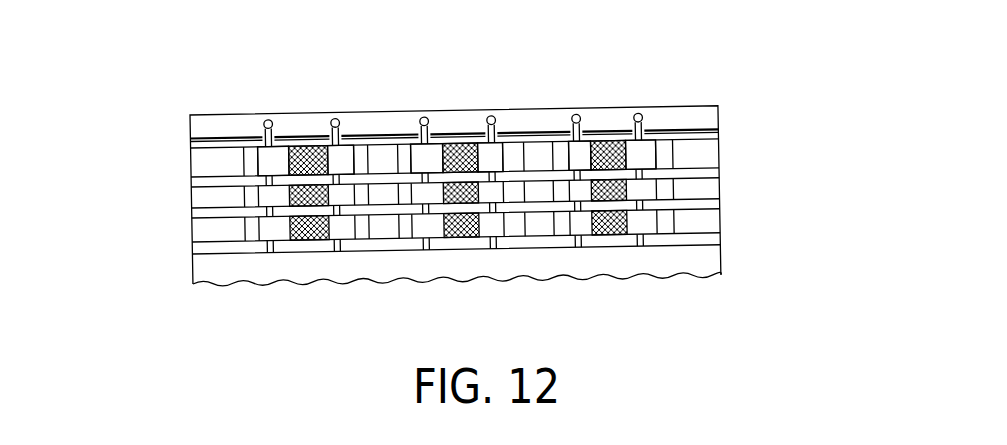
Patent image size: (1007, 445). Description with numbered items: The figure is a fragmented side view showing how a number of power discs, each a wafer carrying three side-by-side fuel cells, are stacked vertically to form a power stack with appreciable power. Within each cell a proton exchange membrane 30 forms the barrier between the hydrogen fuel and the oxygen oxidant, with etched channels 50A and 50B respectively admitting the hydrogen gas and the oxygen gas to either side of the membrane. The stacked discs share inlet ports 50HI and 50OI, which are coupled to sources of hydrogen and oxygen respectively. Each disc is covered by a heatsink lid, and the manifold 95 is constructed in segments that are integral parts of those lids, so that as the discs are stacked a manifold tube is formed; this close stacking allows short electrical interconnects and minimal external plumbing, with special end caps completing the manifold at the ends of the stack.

The manifold 95 is at (163, 115).
The proton exchange membrane 30 is at (315, 242).
The etched channel 50A is at (262, 160).
The etched channel 50B is at (330, 153).
The hydrogen inlet port 50HI is at (265, 119).
The oxygen inlet port 50OI is at (338, 120).